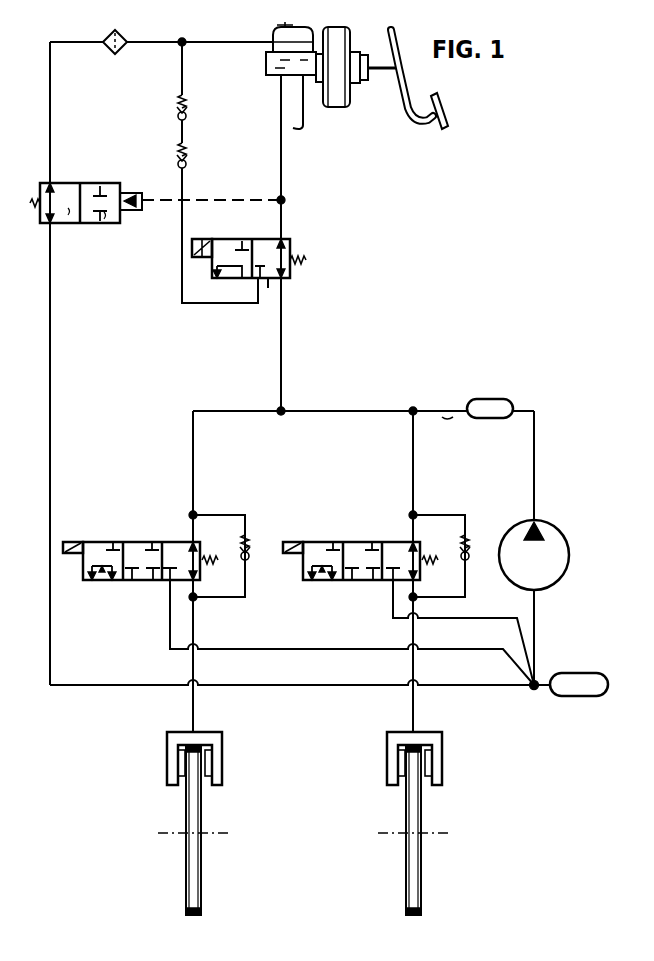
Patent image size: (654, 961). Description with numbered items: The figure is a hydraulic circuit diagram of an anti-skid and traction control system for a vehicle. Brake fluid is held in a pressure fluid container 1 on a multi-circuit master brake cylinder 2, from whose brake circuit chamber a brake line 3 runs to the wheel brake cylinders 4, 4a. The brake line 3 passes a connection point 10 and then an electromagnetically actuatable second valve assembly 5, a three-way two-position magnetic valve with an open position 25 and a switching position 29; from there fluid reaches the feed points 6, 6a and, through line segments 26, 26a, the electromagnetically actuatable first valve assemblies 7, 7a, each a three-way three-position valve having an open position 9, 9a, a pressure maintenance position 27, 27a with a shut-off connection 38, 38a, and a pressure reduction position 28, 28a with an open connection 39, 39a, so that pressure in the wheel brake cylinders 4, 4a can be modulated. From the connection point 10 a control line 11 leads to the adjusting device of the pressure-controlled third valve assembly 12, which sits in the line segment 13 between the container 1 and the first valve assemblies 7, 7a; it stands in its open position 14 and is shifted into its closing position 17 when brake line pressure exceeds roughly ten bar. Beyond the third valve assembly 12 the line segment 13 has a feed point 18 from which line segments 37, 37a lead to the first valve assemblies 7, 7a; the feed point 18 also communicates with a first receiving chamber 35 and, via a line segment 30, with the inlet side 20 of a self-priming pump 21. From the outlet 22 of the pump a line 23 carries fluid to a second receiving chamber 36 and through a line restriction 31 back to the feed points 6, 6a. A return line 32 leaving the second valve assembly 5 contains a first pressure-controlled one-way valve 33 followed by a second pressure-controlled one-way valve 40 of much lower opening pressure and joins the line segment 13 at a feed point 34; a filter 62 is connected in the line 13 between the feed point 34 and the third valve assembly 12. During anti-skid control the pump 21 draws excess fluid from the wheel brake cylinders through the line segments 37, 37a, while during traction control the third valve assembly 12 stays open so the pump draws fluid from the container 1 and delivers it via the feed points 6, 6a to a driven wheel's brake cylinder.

The pressure fluid container 1 is at (272, 38).
The multi-circuit master brake cylinder 2 is at (268, 70).
The brake line 3 is at (284, 164).
The wheel brake cylinder 4 is at (224, 762).
The wheel brake cylinder 4a is at (445, 762).
The second valve assembly 5 is at (196, 239).
The feed point 6 is at (284, 410).
The feed point 6a is at (415, 408).
The first valve assembly 7 is at (72, 550).
The first valve assembly 7a is at (297, 551).
The open position 9 is at (190, 515).
The open position 9a is at (398, 556).
The connection point 10 is at (284, 201).
The control line 11 is at (222, 198).
The third valve assembly 12 is at (69, 181).
The line segment 13 is at (52, 406).
The open position 14 is at (52, 226).
The closing position 17 is at (101, 226).
The feed point 18 is at (535, 690).
The inlet side 20 is at (537, 593).
The pump 21 is at (574, 539).
The outlet 22 is at (537, 520).
The line 23 is at (420, 408).
The open position 25 is at (268, 282).
The line segment 26 is at (195, 448).
The line segment 26a is at (417, 462).
The pressure maintenance position 27 is at (138, 556).
The pressure maintenance position 27a is at (358, 556).
The pressure reduction position 28 is at (97, 556).
The pressure reduction position 28a is at (318, 556).
The switching position 29 is at (222, 246).
The line segment 30 is at (538, 645).
The line restriction 31 is at (447, 403).
The return line 32 is at (180, 270).
The first pressure-controlled one-way valve 33 is at (186, 163).
The feed point 34 is at (183, 46).
The first receiving chamber 35 is at (580, 696).
The second receiving chamber 36 is at (490, 404).
The line segment 37 is at (168, 645).
The line segment 37a is at (433, 621).
The shut-off connection 38 is at (138, 581).
The shut-off connection 38a is at (356, 581).
The open connection 39 is at (96, 581).
The open connection 39a is at (318, 581).
The second pressure-controlled one-way valve 40 is at (180, 120).
The filter 62 is at (117, 55).